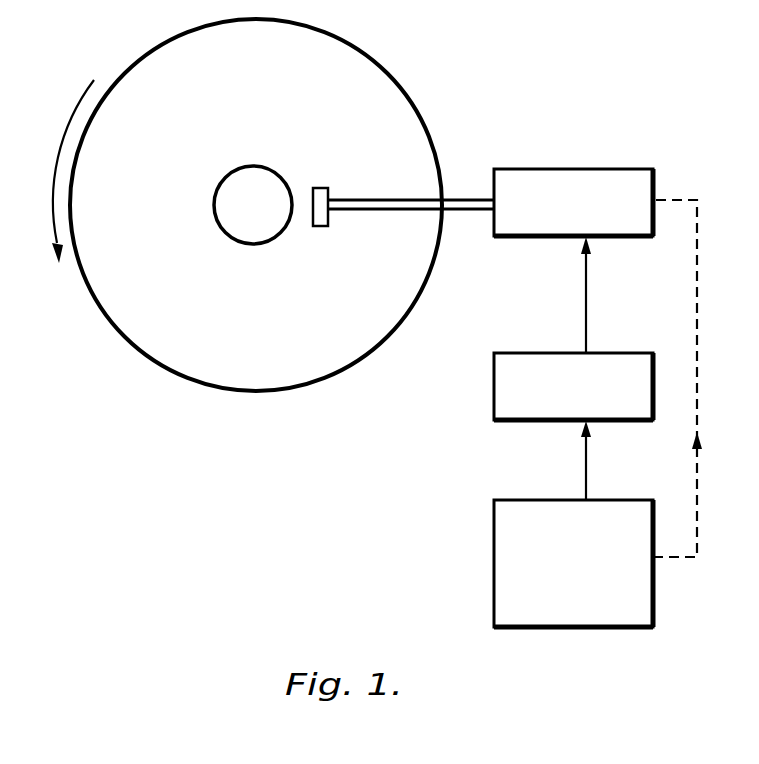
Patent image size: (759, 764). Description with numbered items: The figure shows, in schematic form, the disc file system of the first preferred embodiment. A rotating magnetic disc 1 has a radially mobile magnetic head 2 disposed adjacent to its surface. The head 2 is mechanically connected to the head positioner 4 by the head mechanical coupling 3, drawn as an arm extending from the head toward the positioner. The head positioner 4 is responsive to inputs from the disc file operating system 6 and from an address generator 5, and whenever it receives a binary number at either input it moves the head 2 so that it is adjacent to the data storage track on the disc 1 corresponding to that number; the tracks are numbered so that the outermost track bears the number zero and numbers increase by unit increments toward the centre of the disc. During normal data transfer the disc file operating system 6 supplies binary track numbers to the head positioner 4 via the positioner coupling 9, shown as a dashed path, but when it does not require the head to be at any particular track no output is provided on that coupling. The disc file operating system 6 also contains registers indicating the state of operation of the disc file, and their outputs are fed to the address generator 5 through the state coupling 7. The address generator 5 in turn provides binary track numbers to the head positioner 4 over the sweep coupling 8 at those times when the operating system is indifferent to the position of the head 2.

The magnetic disc 1 is at (168, 373).
The magnetic head 2 is at (322, 187).
The head mechanical coupling 3 is at (378, 198).
The head positioner 4 is at (590, 169).
The address generator 5 is at (628, 353).
The disc file operating system 6 is at (494, 573).
The state coupling 7 is at (586, 461).
The sweep coupling 8 is at (586, 282).
The positioner coupling 9 is at (696, 290).